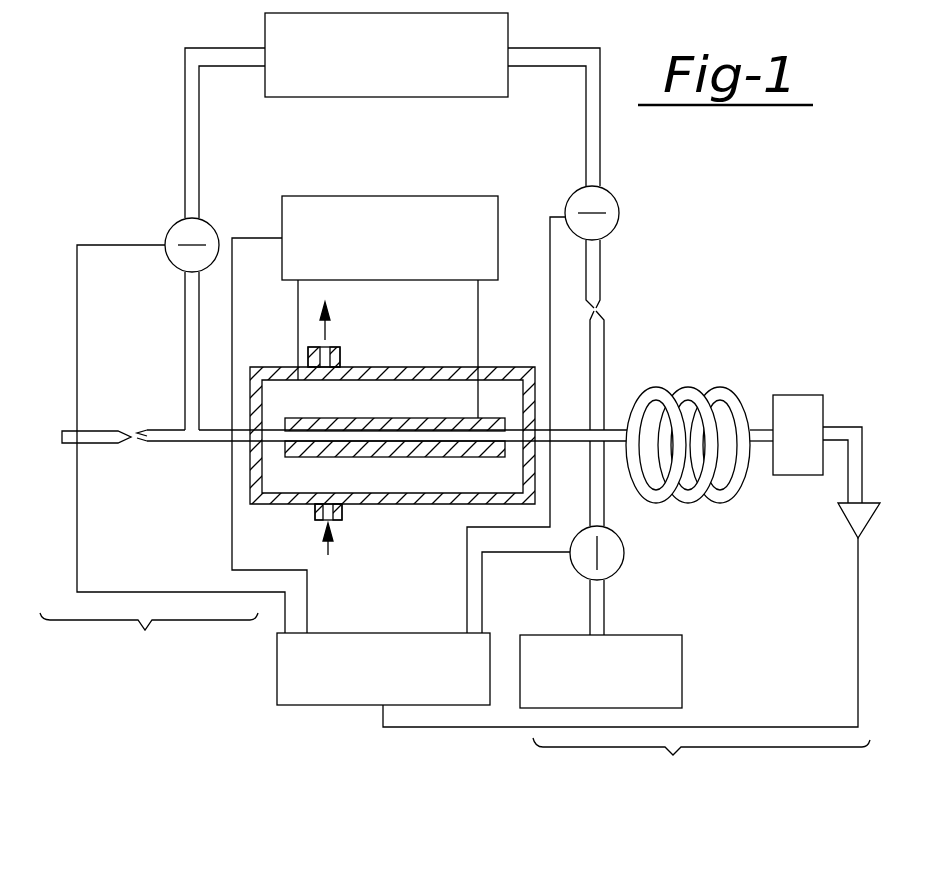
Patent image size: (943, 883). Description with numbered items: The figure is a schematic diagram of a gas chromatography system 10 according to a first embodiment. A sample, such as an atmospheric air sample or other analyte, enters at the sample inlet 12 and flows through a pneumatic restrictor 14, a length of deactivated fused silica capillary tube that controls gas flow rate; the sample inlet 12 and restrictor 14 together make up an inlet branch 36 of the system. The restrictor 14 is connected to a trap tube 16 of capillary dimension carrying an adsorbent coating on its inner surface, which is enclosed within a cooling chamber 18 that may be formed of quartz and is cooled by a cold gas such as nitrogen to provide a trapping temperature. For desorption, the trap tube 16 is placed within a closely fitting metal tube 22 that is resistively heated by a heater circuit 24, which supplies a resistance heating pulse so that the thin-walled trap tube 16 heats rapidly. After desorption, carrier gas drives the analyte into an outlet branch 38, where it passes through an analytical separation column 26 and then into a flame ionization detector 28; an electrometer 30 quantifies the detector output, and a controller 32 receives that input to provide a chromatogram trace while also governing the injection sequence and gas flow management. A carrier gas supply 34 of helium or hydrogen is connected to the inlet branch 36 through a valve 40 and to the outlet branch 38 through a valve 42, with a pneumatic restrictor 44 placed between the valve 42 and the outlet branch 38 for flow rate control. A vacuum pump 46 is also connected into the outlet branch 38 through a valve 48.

The gas chromatography system 10 is at (715, 213).
The sample inlet 12 is at (68, 428).
The pneumatic restrictor 14 is at (143, 428).
The trap tube 16 is at (327, 440).
The cooling chamber 18 is at (390, 504).
The metal tube 22 is at (363, 423).
The heater circuit 24 is at (330, 196).
The analytical separation column 26 is at (650, 387).
The flame ionization detector 28 is at (797, 395).
The electrometer 30 is at (840, 508).
The controller 32 is at (348, 633).
The carrier gas supply 34 is at (435, 97).
The inlet branch 36 is at (173, 456).
The outlet branch 38 is at (626, 504).
The valve 40 is at (173, 227).
The valve 42 is at (602, 197).
The pneumatic restrictor 44 is at (596, 300).
The vacuum pump 46 is at (633, 635).
The valve 48 is at (610, 577).